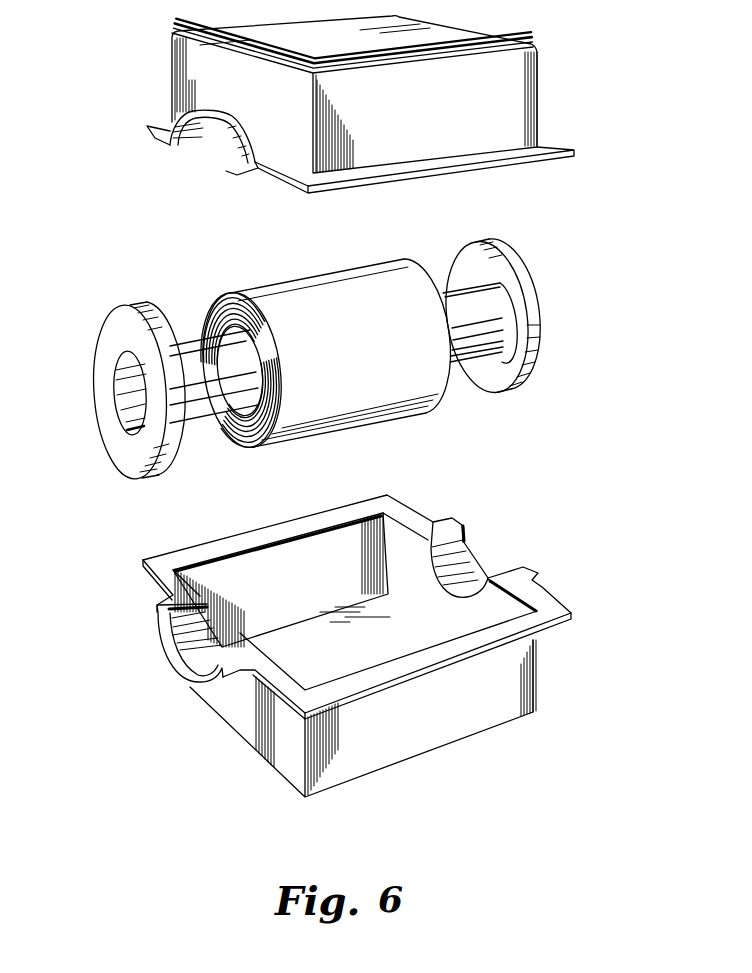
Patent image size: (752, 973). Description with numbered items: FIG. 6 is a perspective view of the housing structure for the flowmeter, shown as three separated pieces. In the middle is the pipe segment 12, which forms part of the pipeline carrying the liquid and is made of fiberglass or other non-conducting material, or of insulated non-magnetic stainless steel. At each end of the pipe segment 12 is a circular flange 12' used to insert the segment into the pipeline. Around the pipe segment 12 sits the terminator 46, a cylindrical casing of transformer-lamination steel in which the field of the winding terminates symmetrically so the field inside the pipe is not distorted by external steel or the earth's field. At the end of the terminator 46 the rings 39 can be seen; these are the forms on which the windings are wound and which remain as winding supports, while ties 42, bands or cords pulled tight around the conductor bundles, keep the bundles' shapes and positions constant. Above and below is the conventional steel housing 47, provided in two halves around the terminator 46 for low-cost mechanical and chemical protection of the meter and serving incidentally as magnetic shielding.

The steel housing 47 is at (556, 106).
The circular flange 12' is at (312, 356).
The pipe segment 12 is at (336, 353).
The terminator 46 is at (378, 338).
The ring 39 is at (266, 322).
The tie 42 is at (250, 345).